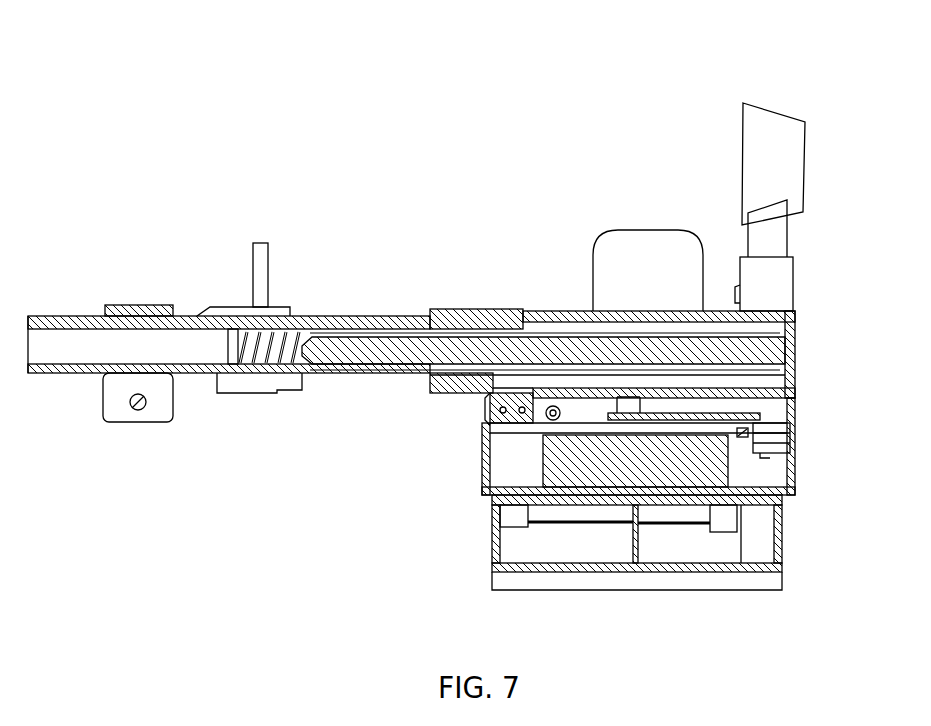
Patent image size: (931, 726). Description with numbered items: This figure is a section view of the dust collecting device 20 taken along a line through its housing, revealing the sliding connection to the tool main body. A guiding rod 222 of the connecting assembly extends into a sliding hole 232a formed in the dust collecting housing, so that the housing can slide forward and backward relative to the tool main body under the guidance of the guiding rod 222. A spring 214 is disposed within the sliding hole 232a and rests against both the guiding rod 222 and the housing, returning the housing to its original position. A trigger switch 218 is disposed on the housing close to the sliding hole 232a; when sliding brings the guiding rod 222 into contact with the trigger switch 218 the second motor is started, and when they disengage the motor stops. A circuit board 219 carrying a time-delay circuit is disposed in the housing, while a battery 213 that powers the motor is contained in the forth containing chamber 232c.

The dust collecting device 20 is at (418, 122).
The guiding rod 222 is at (376, 322).
The spring 214 is at (566, 338).
The sliding hole 232a is at (765, 328).
The trigger switch 218 is at (495, 398).
The circuit board 219 is at (792, 407).
The forth containing chamber 232c is at (772, 477).
The battery 213 is at (506, 498).